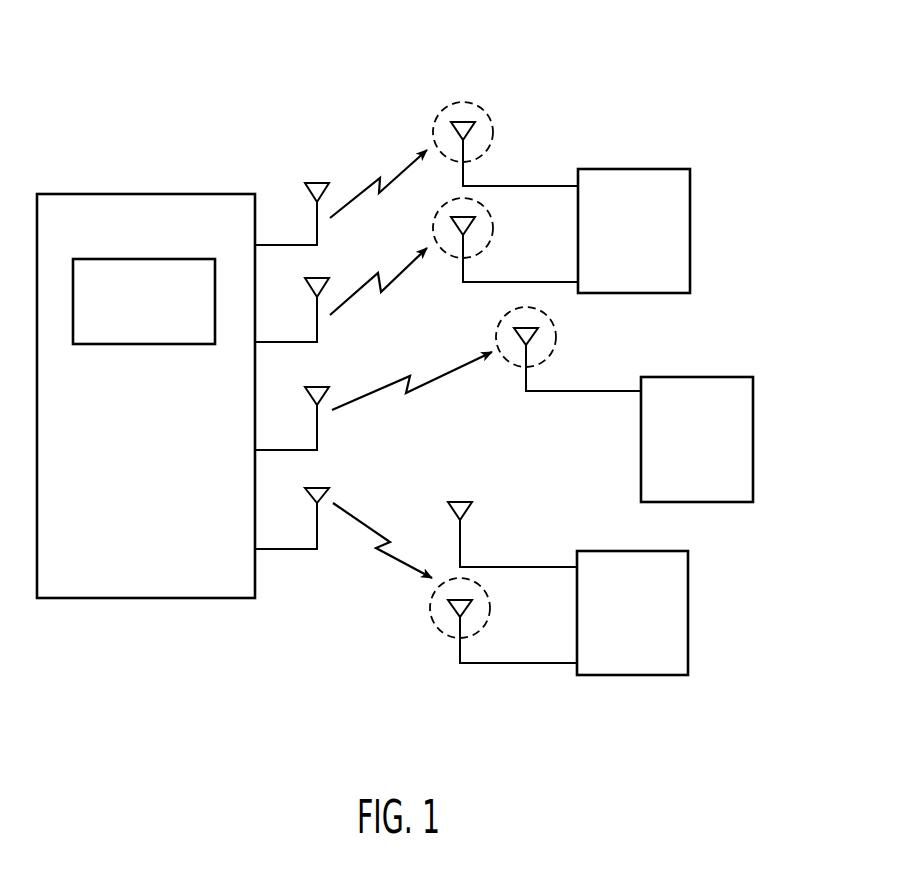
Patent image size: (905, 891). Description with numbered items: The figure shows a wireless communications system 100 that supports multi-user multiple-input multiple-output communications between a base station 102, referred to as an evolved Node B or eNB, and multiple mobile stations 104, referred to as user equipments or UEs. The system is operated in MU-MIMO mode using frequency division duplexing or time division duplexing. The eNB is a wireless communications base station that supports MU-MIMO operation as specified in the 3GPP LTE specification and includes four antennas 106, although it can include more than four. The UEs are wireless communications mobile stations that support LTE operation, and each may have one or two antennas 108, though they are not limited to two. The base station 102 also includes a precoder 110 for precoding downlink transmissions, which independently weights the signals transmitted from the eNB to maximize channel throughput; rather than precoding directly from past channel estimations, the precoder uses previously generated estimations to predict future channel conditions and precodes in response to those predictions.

The wireless communications system 100 is at (100, 68).
The base station 102 is at (170, 194).
The mobile stations 104 is at (665, 169).
The antennas 106 is at (317, 232).
The antennas 108 is at (527, 186).
The precoder 110 is at (95, 345).